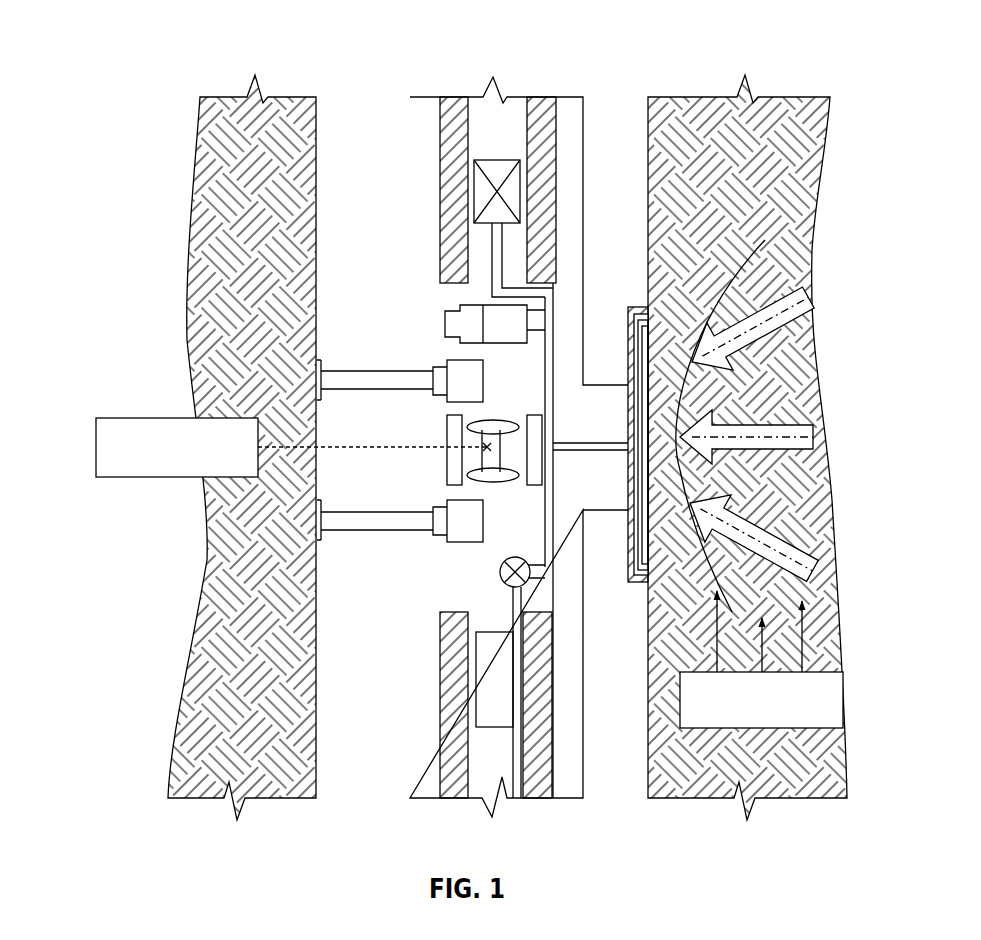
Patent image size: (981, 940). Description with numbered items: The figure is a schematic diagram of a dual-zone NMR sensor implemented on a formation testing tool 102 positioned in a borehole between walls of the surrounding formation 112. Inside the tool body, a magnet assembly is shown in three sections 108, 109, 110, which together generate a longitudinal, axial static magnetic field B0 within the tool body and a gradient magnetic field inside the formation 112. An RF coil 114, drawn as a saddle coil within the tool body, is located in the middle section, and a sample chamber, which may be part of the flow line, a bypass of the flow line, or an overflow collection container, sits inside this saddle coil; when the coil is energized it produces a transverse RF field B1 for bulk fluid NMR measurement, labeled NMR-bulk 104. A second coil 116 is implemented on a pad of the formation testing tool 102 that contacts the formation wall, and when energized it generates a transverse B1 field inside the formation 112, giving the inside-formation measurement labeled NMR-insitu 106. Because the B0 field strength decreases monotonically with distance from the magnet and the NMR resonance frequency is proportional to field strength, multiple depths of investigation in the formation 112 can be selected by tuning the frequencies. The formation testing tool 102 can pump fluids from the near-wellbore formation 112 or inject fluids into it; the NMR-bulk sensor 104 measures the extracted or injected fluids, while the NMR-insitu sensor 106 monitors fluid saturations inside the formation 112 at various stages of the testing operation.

The formation testing tool 102 is at (518, 86).
The NMR-bulk sensor 104 is at (96, 450).
The NMR-insitu sensor 106 is at (843, 703).
The magnet assembly section 108 is at (400, 186).
The magnet assembly section 109 is at (400, 436).
The magnet assembly section 110 is at (400, 699).
The formation 112 is at (795, 97).
The RF coil 114 is at (497, 420).
The second coil 116 is at (622, 312).